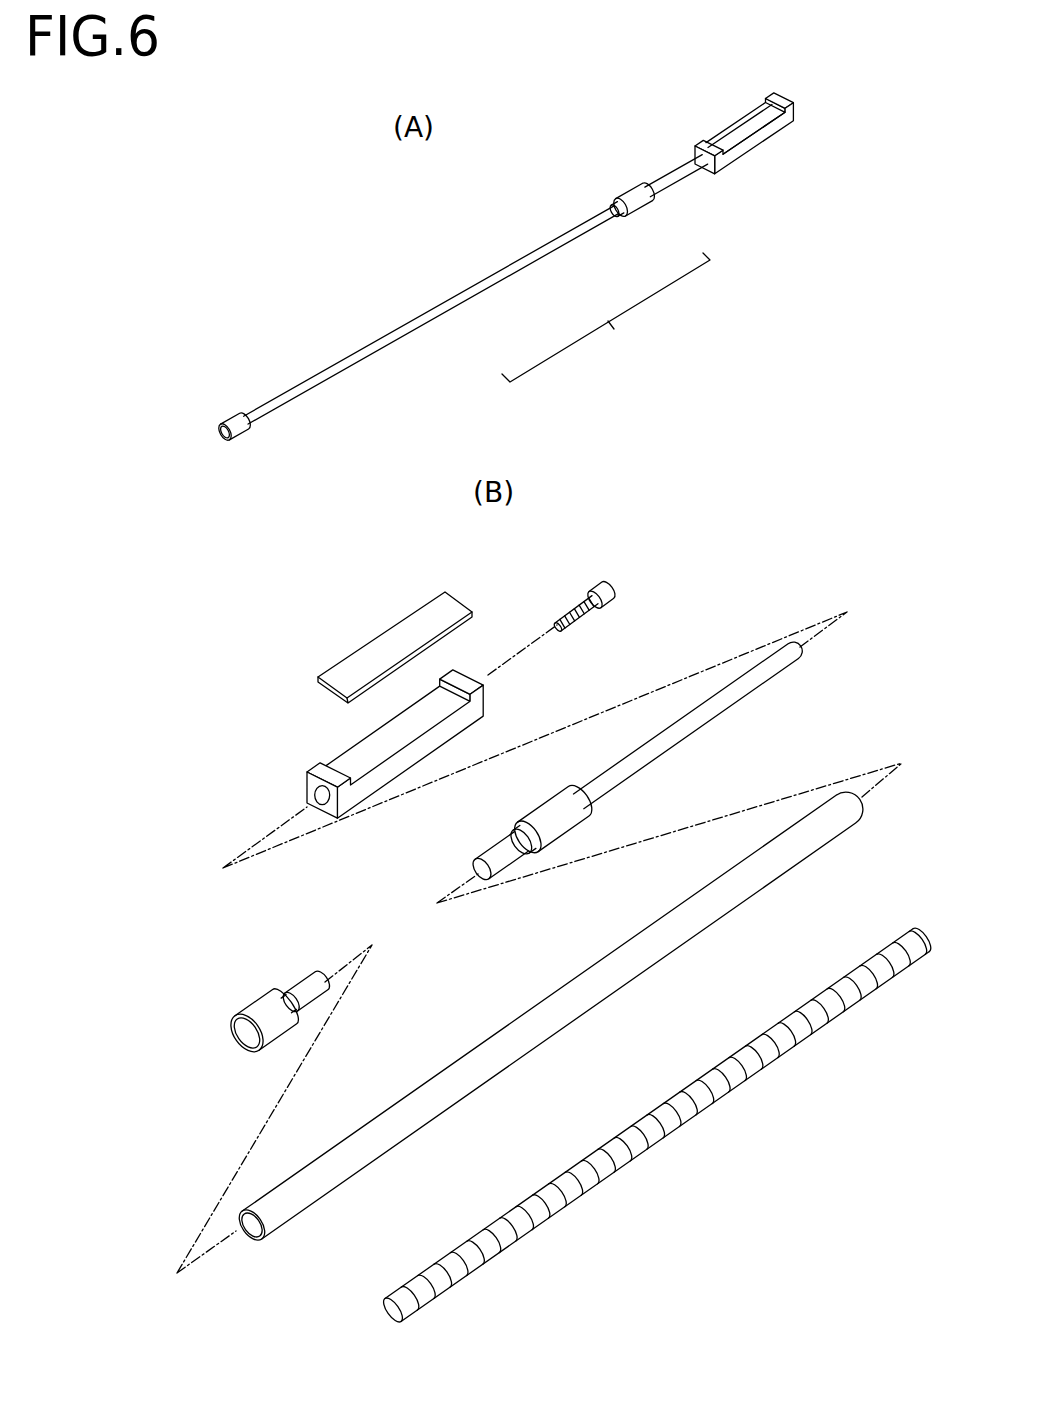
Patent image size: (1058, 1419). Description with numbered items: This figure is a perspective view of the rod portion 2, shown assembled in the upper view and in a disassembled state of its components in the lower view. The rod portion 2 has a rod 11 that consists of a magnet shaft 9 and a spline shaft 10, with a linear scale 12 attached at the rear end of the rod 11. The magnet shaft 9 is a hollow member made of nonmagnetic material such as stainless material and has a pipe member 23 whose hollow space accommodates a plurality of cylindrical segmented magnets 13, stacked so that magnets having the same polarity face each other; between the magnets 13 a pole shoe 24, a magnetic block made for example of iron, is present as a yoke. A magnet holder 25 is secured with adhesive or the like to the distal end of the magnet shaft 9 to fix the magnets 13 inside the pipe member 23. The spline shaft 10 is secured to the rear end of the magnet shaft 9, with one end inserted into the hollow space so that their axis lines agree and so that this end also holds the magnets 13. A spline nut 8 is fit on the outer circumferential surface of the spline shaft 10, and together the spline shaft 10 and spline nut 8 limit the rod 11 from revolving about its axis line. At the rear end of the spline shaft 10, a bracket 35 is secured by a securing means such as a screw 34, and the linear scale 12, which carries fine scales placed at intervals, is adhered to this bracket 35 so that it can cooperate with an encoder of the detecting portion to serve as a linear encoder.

The rod portion 2 is at (433, 291).
The spline nut 8 is at (632, 187).
The magnet shaft 9 is at (493, 285).
The spline shaft 10 is at (680, 172).
The rod 11 is at (606, 317).
The linear scale 12 is at (767, 113).
The magnets 13 is at (488, 1222).
The pipe member 23 is at (316, 1176).
The pole shoe 24 is at (684, 1092).
The magnet holder 25 is at (257, 1003).
The screw 34 is at (577, 603).
The bracket 35 is at (342, 763).